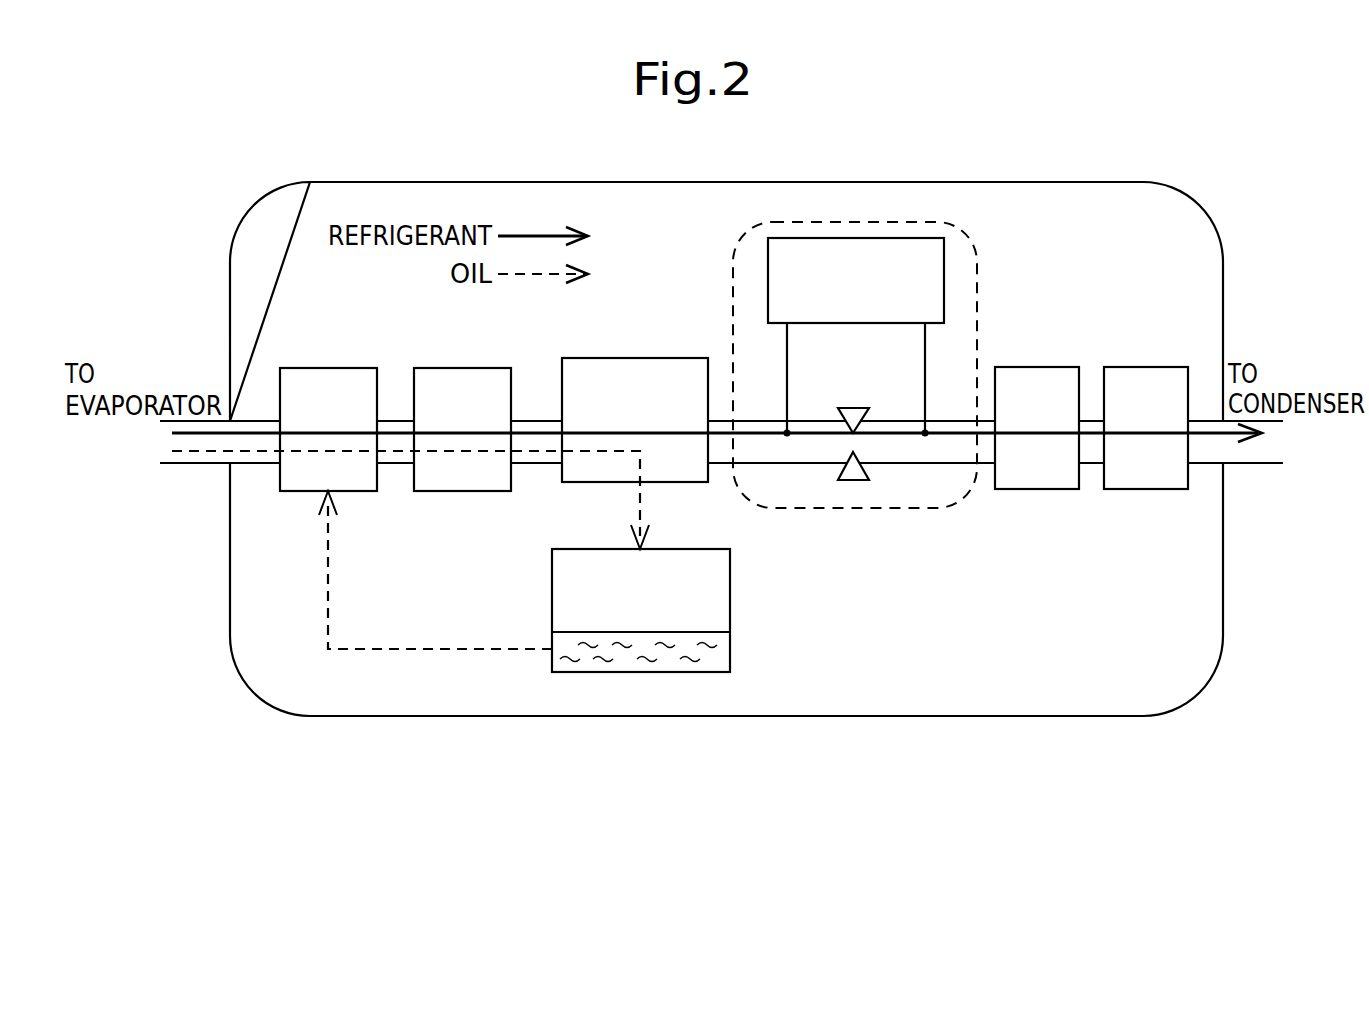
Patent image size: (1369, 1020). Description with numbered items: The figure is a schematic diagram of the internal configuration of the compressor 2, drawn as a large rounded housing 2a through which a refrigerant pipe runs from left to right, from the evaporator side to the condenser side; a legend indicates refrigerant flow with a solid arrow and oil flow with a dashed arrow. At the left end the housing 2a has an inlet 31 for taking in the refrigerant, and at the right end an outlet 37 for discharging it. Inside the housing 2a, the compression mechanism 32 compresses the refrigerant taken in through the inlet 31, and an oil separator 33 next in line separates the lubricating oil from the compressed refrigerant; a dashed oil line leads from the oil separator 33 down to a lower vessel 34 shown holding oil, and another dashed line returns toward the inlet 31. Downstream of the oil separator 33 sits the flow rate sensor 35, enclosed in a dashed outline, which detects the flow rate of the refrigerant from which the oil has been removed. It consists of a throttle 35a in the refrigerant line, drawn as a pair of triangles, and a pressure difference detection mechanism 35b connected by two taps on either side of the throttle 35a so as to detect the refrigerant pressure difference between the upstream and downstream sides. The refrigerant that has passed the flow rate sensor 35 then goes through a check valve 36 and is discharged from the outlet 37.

The compressor 2 is at (258, 700).
The housing 2a is at (407, 716).
The inlet 31 is at (297, 491).
The compression mechanism 32 is at (462, 491).
The oil separator 33 is at (683, 482).
The oil reservoir 34 is at (730, 614).
The flow rate sensor 35 is at (760, 229).
The throttle 35a is at (852, 480).
The pressure difference detection mechanism 35b is at (944, 285).
The check valve 36 is at (1040, 489).
The outlet 37 is at (1150, 489).